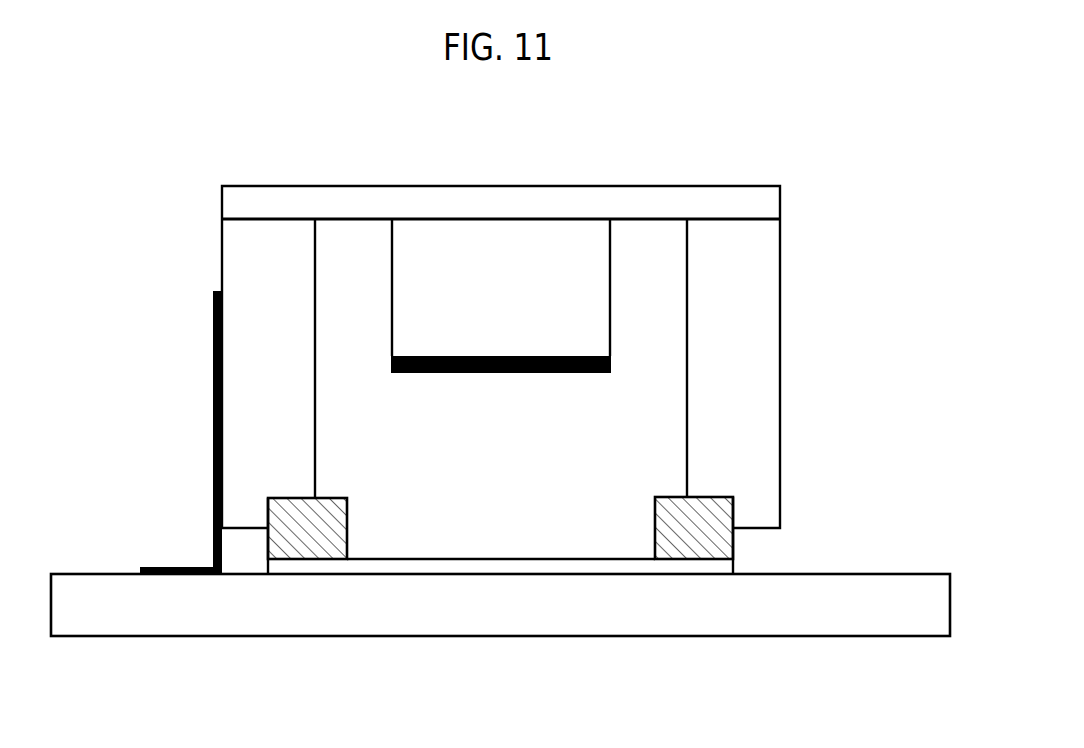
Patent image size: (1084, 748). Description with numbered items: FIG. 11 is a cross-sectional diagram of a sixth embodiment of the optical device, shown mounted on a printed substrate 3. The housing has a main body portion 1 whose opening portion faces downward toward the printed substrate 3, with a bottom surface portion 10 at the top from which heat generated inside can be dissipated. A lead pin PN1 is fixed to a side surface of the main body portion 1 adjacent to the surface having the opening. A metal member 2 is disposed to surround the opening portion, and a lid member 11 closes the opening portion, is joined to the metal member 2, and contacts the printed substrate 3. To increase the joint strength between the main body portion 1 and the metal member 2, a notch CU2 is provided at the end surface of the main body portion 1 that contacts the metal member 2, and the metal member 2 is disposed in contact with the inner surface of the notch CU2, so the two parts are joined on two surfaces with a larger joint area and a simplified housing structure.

The main body portion 1 is at (735, 303).
The bottom surface portion 10 is at (713, 202).
The lid member 11 is at (597, 567).
The metal member 2 is at (317, 528).
The printed substrate 3 is at (845, 604).
The lead pin PN1 is at (213, 553).
The notch CU2 is at (293, 497).